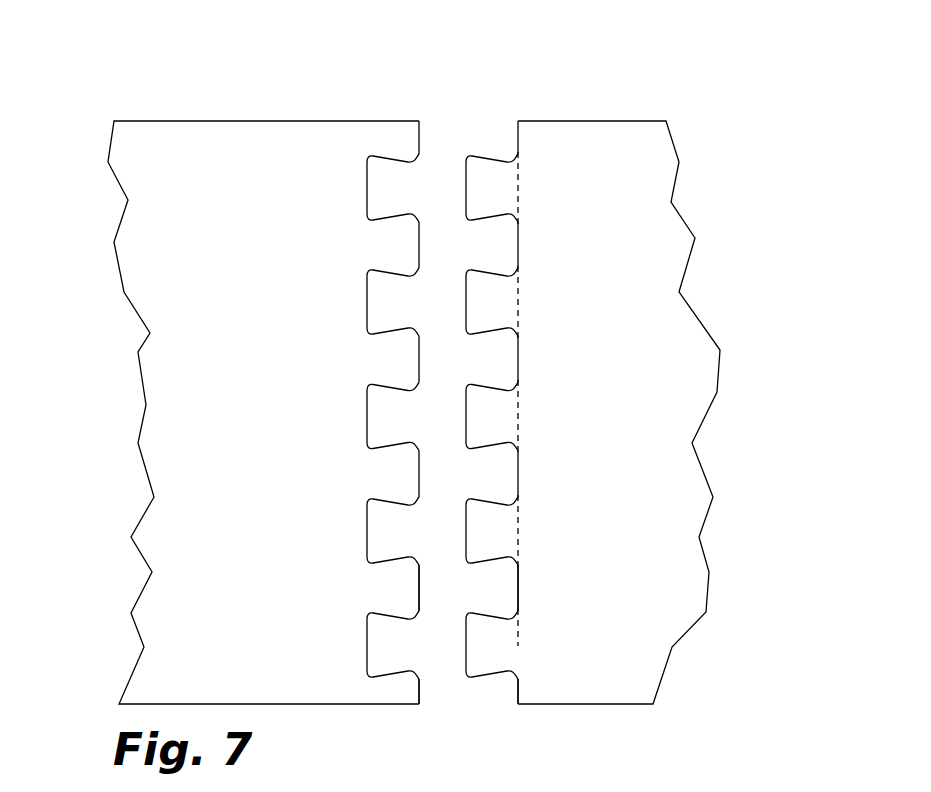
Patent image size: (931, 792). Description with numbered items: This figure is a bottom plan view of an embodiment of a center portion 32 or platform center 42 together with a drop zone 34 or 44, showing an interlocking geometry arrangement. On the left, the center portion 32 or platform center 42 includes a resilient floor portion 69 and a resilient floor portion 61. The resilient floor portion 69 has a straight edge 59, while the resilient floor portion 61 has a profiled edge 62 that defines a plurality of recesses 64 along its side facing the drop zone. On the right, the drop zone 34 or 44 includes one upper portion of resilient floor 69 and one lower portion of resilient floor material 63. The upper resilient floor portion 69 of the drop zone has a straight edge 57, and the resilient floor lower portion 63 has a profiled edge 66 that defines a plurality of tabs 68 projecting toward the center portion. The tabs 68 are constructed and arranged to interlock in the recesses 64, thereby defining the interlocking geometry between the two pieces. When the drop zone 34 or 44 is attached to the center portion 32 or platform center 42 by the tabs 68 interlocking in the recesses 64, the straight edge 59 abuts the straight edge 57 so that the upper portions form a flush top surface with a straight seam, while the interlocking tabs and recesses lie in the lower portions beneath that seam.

The center portion 32 is at (211, 80).
The drop zone 34 is at (611, 99).
The platform center 42 is at (317, 102).
The drop zone 44 is at (714, 125).
The straight edge 57 is at (518, 646).
The straight edge 59 is at (420, 651).
The resilient floor portion 61 is at (272, 317).
The profiled edge 62 is at (393, 155).
The resilient floor lower portion 63 is at (599, 327).
The recess 64 is at (378, 199).
The profiled edge 66 is at (486, 155).
The tab 68 is at (478, 199).
The resilient floor portion 69 is at (378, 315).